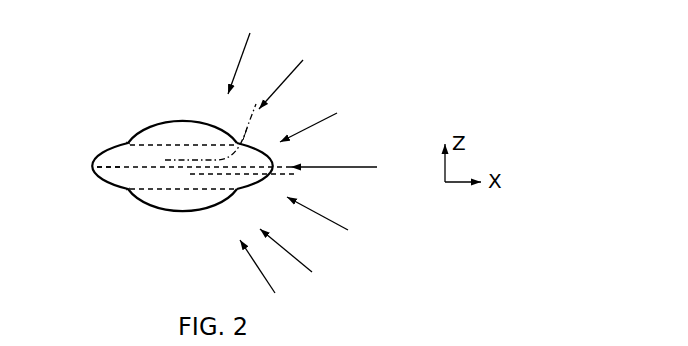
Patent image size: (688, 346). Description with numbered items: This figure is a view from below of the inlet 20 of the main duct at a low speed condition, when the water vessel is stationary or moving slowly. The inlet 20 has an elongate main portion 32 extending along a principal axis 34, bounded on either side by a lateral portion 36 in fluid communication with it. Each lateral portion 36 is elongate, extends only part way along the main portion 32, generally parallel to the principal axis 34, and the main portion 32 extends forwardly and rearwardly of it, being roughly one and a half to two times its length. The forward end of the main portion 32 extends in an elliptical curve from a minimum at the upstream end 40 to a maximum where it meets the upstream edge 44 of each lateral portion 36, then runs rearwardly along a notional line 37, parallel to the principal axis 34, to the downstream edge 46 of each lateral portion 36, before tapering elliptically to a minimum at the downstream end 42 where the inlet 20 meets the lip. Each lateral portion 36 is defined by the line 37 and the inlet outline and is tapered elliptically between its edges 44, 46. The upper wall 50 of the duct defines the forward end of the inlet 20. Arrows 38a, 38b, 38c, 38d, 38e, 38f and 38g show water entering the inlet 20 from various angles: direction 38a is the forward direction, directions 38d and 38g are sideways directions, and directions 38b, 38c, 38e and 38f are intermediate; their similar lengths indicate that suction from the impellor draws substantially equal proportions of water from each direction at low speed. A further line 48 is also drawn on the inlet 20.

The inlet 20 is at (178, 173).
The elongate main portion 32 is at (130, 173).
The principal axis 34 is at (218, 168).
The lateral portion 36 is at (172, 133).
The notional line 37 is at (150, 148).
The upstream end 40 is at (273, 161).
The downstream end 42 is at (94, 169).
The upstream edge 44 is at (245, 110).
The downstream edge 46 is at (128, 139).
The surface line 48 is at (232, 134).
The upper wall 50 is at (247, 175).
The direction 38a is at (358, 167).
The direction 38b is at (337, 113).
The direction 38c is at (303, 60).
The direction 38d is at (250, 33).
The direction 38e is at (367, 216).
The direction 38f is at (312, 272).
The direction 38g is at (275, 293).